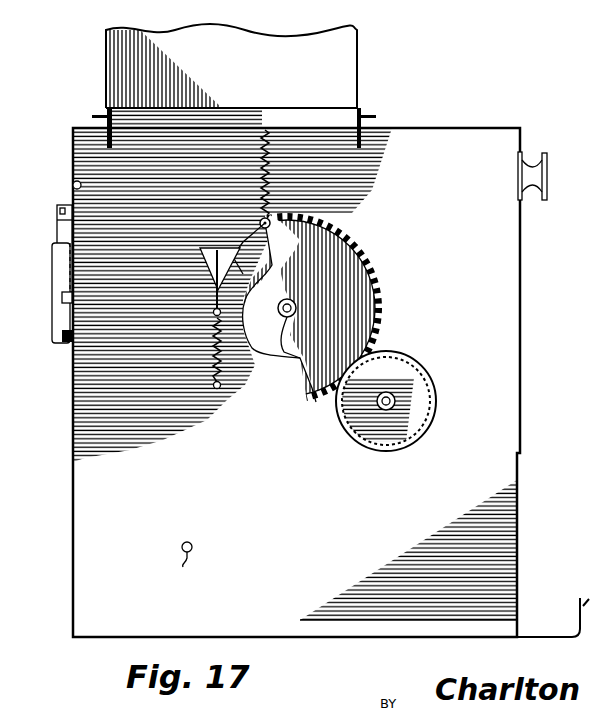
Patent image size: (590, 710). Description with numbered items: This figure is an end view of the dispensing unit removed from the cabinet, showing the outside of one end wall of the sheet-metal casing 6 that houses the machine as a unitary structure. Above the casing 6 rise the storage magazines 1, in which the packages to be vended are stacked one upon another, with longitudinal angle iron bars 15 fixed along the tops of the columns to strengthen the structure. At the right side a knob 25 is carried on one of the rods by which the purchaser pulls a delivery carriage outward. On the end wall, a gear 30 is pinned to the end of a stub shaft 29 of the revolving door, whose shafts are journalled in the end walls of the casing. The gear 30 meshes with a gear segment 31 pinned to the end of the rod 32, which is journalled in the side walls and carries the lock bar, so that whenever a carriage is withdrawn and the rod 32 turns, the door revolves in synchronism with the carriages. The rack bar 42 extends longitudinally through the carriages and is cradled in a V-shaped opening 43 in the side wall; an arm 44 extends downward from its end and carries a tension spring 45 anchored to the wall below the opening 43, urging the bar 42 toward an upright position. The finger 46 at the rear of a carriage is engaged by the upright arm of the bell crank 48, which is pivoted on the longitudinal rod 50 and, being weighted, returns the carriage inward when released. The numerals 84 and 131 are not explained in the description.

The storage magazines 1 is at (358, 60).
The casing 6 is at (73, 470).
The longitudinal angle iron bars 15 is at (105, 116).
The knobs 25 is at (538, 177).
The stub shafts 29 is at (396, 387).
The gear 30 is at (434, 365).
The gear segment 31 is at (350, 247).
The rod 32 is at (288, 356).
The rack bar 42 is at (238, 270).
The V-shaped openings 43 is at (269, 229).
The arms 44 is at (222, 302).
The tension springs 45 is at (226, 343).
The finger 46 is at (58, 318).
The bell crank 48 is at (68, 344).
The longitudinal rod 50 is at (194, 562).
The spring 84 is at (268, 150).
The pin 131 is at (74, 183).